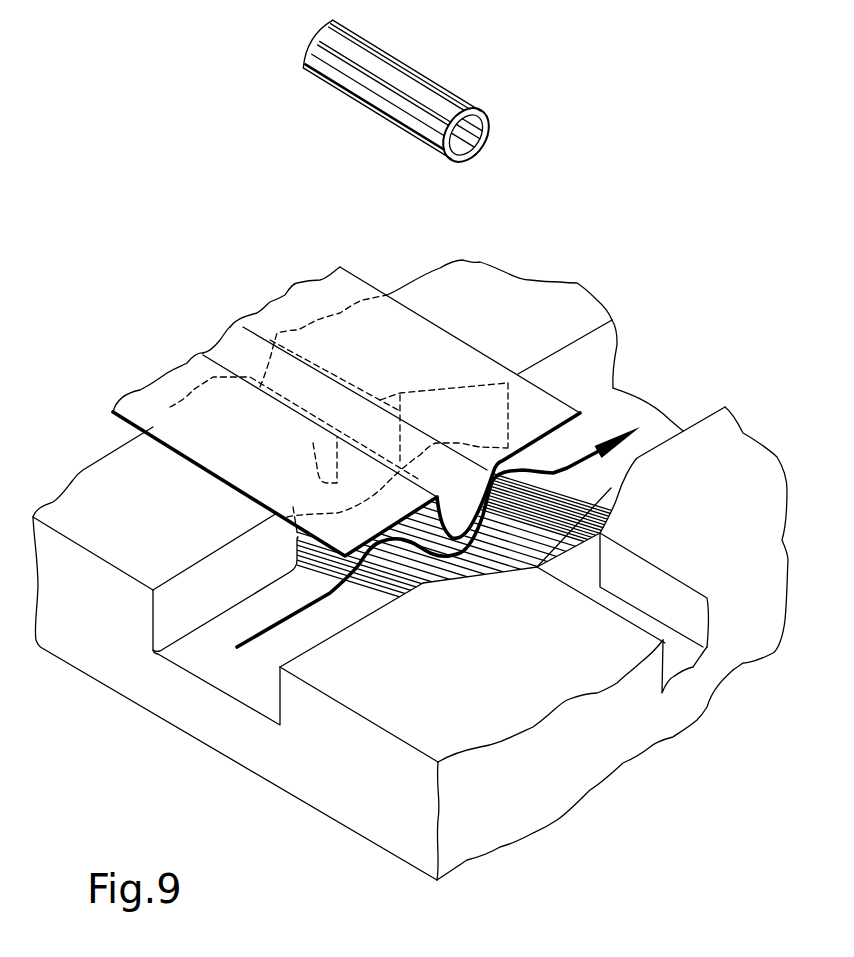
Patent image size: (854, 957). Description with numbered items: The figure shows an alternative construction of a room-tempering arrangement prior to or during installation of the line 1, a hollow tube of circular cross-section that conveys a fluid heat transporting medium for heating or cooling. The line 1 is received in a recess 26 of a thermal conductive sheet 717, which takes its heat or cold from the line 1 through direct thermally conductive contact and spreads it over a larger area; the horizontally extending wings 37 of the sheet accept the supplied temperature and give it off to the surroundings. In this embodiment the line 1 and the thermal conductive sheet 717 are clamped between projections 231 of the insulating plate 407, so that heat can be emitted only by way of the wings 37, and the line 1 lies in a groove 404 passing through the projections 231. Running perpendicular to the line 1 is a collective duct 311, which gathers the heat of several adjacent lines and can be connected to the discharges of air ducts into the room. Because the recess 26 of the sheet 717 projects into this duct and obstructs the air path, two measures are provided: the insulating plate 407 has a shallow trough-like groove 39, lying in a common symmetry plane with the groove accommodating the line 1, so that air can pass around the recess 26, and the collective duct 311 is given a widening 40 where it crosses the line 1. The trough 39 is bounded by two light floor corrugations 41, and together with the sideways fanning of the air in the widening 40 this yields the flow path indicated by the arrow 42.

The line 1 is at (447, 85).
The recess 26 is at (240, 357).
The wings 37 is at (150, 402).
The thermal conductive sheet 717 is at (193, 357).
The projections 231 is at (102, 503).
The widening 40 is at (637, 458).
The floor corrugations 41 is at (388, 572).
The trough-like groove 39 is at (484, 571).
The arrow 42 is at (247, 652).
The collective duct 311 is at (200, 649).
The groove 404 is at (680, 657).
The insulating plate 407 is at (527, 810).